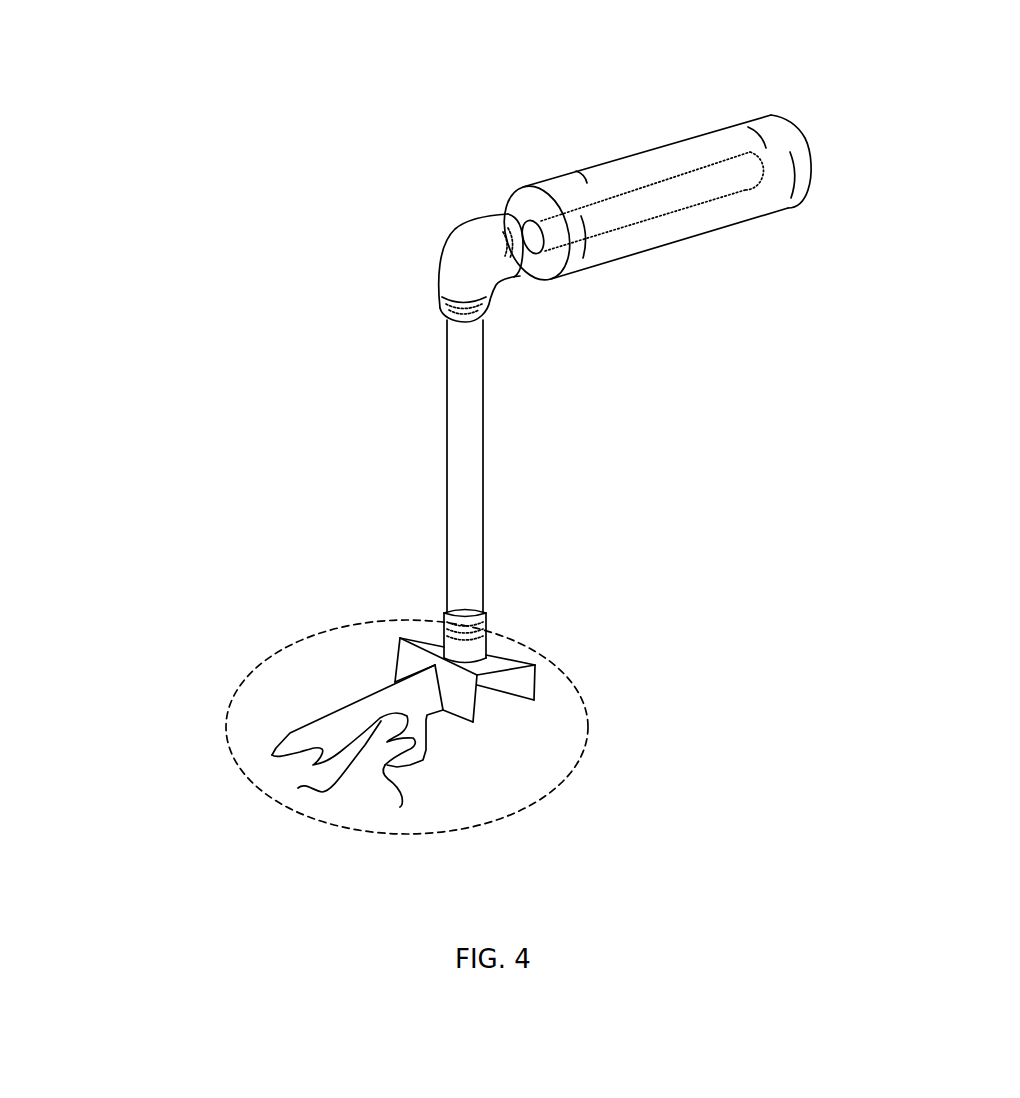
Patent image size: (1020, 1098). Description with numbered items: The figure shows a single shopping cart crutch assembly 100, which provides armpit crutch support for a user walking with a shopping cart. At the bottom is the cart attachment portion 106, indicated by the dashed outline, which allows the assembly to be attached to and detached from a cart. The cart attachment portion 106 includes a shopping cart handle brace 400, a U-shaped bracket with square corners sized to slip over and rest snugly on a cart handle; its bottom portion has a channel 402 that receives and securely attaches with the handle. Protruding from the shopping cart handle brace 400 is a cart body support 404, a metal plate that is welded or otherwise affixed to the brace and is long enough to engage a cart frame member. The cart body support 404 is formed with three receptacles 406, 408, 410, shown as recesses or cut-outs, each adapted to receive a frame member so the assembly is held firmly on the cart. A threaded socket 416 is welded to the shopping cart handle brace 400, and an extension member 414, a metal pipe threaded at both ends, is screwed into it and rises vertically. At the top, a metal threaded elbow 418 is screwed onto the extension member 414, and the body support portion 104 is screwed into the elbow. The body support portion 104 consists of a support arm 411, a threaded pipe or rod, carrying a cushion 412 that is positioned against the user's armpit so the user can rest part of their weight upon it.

The shopping cart crutch assembly 100 is at (318, 140).
The body support portion 104 is at (593, 168).
The cart attachment portion 106 is at (288, 648).
The shopping cart handle brace 400 is at (500, 662).
The channel 402 is at (500, 697).
The cart body support 404 is at (330, 727).
The first receptacle 406 is at (310, 755).
The receptacle 408 is at (298, 788).
The receptacle 410 is at (400, 807).
The support arm 411 is at (688, 172).
The cushion 412 is at (753, 221).
The extension member 414 is at (470, 467).
The threaded socket 416 is at (443, 627).
The metal threaded elbow 418 is at (460, 272).